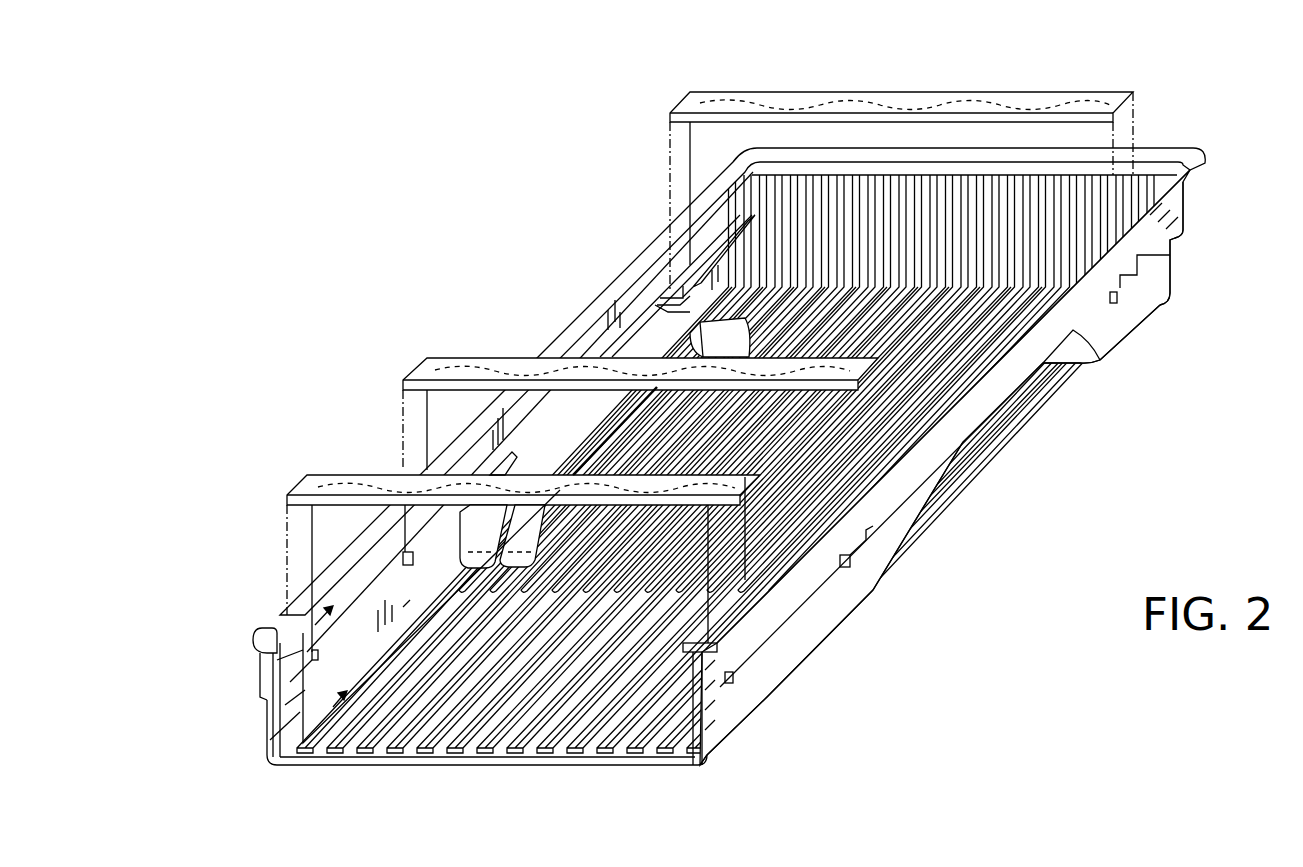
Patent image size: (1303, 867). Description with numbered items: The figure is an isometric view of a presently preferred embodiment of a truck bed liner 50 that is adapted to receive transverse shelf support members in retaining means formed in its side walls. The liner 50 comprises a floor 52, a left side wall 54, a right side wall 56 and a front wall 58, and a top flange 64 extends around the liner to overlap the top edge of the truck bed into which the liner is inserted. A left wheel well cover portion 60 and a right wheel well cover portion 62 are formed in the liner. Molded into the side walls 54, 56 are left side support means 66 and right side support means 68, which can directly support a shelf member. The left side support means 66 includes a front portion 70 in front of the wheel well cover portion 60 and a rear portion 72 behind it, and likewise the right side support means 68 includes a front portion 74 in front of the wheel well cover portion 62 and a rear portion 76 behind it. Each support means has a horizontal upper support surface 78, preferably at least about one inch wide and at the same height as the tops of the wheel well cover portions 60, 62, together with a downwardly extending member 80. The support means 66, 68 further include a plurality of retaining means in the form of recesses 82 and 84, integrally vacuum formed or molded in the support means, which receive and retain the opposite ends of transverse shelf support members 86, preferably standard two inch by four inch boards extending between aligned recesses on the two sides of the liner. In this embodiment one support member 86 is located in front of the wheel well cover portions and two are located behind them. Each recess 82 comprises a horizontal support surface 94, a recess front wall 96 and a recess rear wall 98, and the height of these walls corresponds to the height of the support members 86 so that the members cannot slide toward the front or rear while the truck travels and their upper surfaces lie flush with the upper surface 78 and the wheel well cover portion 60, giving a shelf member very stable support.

The truck bed liner 50 is at (380, 306).
The floor 52 is at (472, 752).
The left side wall 54 is at (590, 350).
The right side wall 56 is at (1150, 258).
The front wall 58 is at (883, 190).
The left wheel well cover portion 60 is at (648, 453).
The right wheel well cover portion 62 is at (940, 372).
The top flange 64 is at (1212, 158).
The left side support means 66 is at (418, 587).
The right side support means 68 is at (818, 595).
The front portion 70 is at (737, 262).
The rear portion 72 is at (400, 600).
The front portion 74 is at (1125, 335).
The rear portion 76 is at (795, 640).
The horizontal upper support surface 78 is at (478, 454).
The downwardly extending member 80 is at (268, 748).
The recess 82 is at (672, 300).
The recess 84 is at (1135, 285).
The transverse shelf support member 86 is at (692, 98).
The horizontal support surface 94 is at (683, 295).
The recess front wall 96 is at (683, 283).
The recess rear wall 98 is at (660, 305).